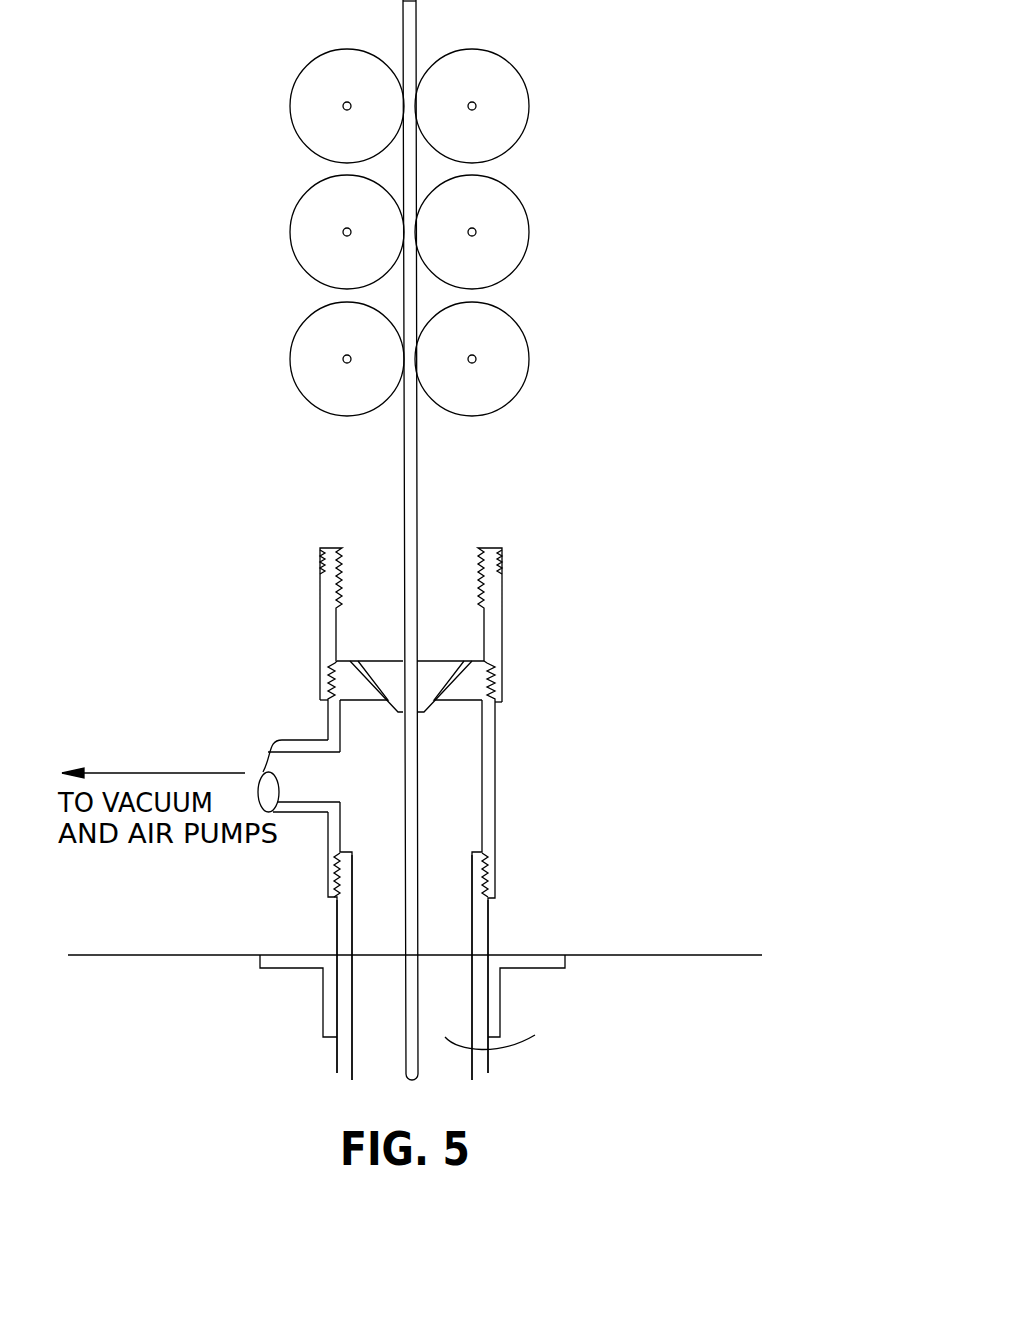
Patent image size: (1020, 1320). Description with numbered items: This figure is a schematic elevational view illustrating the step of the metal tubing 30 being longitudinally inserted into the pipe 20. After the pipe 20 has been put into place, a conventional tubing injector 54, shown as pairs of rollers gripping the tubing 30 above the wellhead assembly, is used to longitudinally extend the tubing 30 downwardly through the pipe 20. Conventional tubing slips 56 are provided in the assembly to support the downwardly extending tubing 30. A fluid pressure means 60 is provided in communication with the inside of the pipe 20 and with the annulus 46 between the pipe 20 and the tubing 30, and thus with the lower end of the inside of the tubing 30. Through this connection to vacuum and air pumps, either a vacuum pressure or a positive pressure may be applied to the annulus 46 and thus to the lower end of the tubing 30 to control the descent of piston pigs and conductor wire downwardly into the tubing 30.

The tubing injector 54 is at (577, 182).
The tubing slips 56 is at (422, 675).
The fluid pressure means 60 is at (282, 740).
The pipe 20 is at (478, 920).
The tubing 30 is at (418, 995).
The annulus 46 is at (508, 1038).